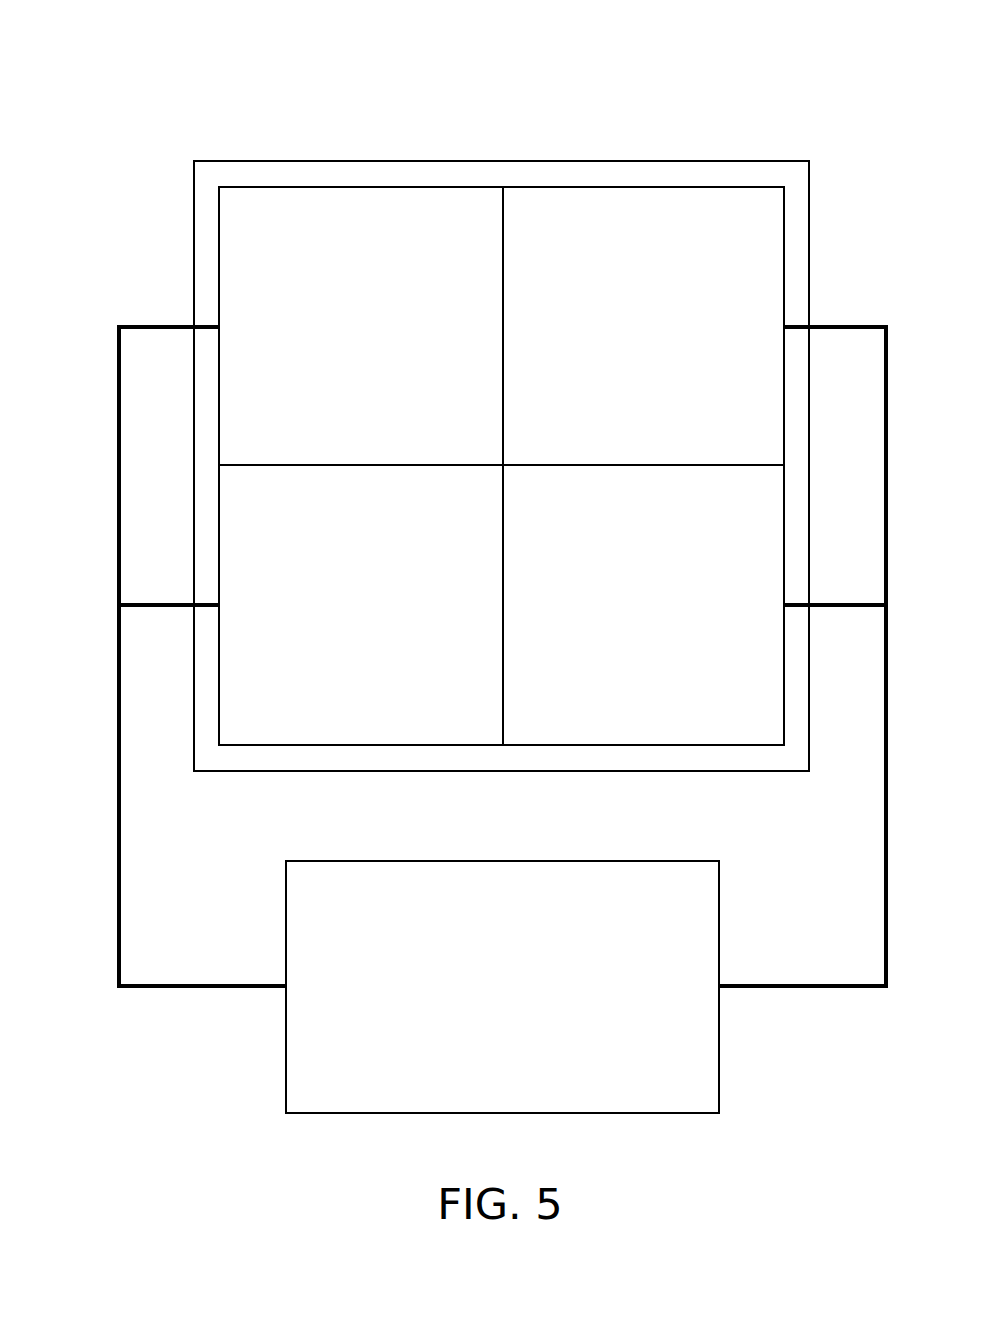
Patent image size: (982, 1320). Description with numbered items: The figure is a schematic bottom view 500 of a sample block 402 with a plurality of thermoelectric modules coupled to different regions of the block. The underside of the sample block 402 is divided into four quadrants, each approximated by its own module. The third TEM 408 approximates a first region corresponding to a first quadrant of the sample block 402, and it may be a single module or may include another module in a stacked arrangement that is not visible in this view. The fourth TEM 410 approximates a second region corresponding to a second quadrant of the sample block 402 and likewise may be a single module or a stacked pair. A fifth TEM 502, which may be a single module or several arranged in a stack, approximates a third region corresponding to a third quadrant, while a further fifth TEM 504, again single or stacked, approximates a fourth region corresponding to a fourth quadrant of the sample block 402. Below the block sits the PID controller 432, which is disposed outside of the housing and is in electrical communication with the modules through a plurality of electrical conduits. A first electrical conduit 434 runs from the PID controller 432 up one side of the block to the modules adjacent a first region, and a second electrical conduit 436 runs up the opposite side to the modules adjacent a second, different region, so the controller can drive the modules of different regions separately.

The power module 500 is at (143, 58).
The sample block 402 is at (538, 161).
The fifth TEM 502 is at (340, 340).
The fifth TEM 504 is at (622, 340).
The third TEM 408 is at (340, 619).
The fourth TEM 410 is at (622, 619).
The PID controller 432 is at (515, 997).
The first electrical conduit 434 is at (822, 988).
The second electrical conduit 436 is at (180, 988).